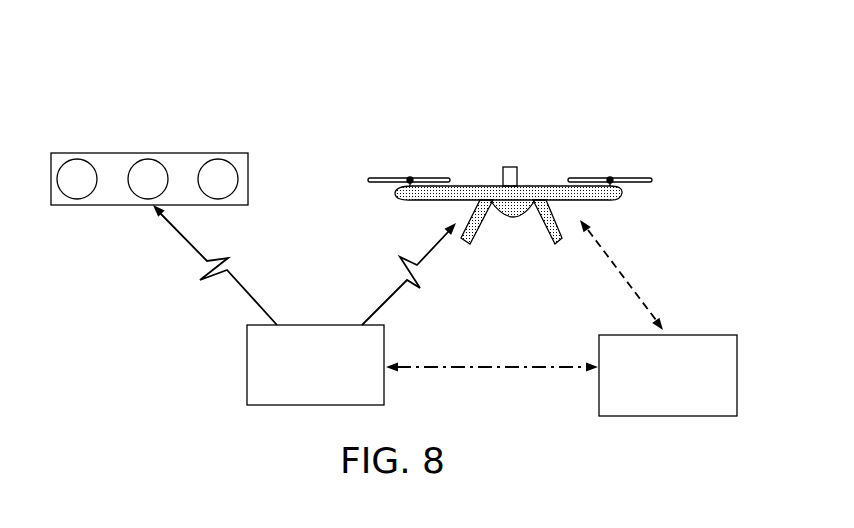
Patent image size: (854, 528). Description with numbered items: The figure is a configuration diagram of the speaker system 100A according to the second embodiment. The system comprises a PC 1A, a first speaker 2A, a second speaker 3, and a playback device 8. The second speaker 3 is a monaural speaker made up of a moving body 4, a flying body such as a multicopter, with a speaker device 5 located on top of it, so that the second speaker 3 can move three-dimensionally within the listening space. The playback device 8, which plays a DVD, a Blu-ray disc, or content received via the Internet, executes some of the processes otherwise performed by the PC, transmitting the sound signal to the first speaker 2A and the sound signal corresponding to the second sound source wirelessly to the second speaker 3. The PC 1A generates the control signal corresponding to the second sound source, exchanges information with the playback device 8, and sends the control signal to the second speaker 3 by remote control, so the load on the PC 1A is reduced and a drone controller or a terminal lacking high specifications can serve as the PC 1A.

The speaker system 100A is at (301, 64).
The first speaker 2A is at (156, 152).
The playback device 8 is at (320, 324).
The PC 1A is at (675, 335).
The second speaker 3 is at (510, 152).
The moving body 4 is at (548, 185).
The speaker device 5 is at (519, 152).